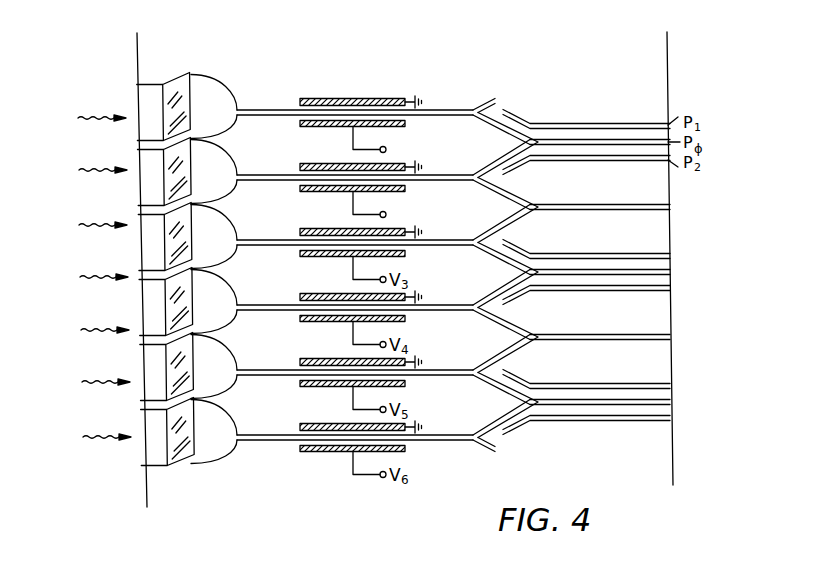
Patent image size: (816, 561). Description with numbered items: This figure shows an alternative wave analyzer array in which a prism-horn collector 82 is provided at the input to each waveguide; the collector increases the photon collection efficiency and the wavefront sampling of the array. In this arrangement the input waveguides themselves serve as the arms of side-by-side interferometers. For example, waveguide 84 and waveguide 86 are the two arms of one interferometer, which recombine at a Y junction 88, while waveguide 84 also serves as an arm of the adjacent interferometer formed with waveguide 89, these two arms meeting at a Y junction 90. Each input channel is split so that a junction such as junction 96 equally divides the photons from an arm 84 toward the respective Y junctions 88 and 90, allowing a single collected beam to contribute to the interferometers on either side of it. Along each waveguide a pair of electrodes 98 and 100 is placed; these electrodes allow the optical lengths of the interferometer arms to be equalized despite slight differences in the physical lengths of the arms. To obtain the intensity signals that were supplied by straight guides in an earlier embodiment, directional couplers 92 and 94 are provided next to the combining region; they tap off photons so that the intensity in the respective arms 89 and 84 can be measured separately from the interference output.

The prism-horn collector 82 is at (212, 93).
The waveguide 84 is at (260, 183).
The waveguide 86 is at (265, 248).
The Y junction 88 is at (533, 206).
The waveguide 89 is at (259, 107).
The Y junction 90 is at (543, 140).
The directional coupler 92 is at (521, 116).
The directional coupler 94 is at (527, 168).
The junction 96 is at (378, 207).
The electrode 98 is at (406, 126).
The electrode 100 is at (379, 99).